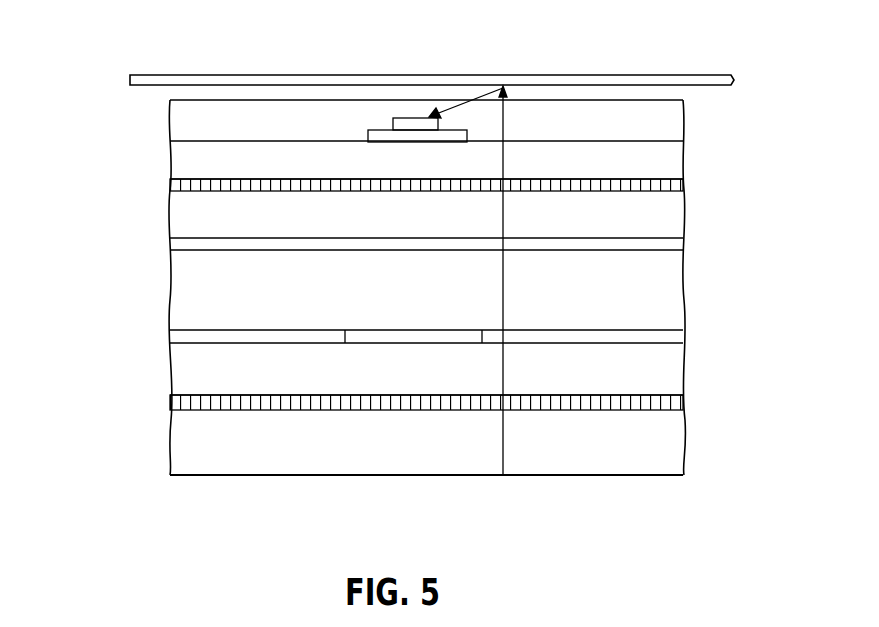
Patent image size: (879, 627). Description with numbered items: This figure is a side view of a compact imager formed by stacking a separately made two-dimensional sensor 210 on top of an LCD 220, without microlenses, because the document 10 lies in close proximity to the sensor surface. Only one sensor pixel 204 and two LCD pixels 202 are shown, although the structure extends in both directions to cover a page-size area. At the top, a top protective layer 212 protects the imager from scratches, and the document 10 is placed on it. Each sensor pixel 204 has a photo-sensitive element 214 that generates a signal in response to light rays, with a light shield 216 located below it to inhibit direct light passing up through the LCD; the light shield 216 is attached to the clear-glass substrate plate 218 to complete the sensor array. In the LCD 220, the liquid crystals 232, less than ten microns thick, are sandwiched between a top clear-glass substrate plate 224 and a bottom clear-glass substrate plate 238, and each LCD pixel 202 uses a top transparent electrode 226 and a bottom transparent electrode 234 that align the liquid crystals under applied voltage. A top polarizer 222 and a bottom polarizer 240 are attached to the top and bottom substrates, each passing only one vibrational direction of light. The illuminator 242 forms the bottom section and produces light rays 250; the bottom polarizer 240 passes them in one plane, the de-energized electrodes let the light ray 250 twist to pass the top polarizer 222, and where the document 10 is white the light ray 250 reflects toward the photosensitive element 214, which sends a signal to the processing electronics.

The document 10 is at (653, 75).
The LCD pixel 202 is at (310, 490).
The sensor pixel 204 is at (482, 490).
The two-dimensional sensor 210 is at (703, 103).
The top protective layer 212 is at (183, 121).
The photo-sensitive element 214 is at (393, 121).
The light shield 216 is at (368, 132).
The clear-glass substrate plate 218 is at (190, 157).
The LCD 220 is at (703, 178).
The top polarizer 222 is at (203, 190).
The top clear-glass substrate plate 224 is at (188, 222).
The top transparent electrode 226 is at (178, 240).
The liquid crystals 232 is at (201, 290).
The bottom transparent electrode 234 is at (182, 337).
The bottom clear-glass substrate plate 238 is at (186, 371).
The bottom polarizer 240 is at (180, 400).
The illuminator 242 is at (190, 438).
The light rays 250 is at (504, 432).